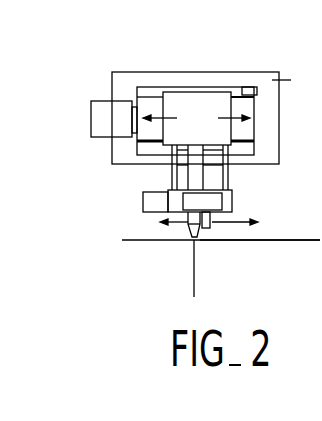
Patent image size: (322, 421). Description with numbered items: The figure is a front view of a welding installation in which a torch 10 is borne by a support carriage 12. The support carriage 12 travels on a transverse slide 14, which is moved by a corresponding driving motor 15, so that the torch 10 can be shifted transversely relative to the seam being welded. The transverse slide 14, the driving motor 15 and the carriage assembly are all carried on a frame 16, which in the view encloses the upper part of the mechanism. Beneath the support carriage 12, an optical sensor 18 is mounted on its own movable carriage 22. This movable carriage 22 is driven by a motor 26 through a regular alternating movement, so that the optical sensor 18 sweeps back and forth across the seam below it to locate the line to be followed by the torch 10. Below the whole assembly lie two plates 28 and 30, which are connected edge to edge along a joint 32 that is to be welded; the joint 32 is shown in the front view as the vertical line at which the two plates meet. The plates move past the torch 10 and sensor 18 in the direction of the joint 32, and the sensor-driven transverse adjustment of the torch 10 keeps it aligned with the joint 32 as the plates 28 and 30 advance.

The torch 10 is at (183, 233).
The support carriage 12 is at (202, 103).
The transverse slide 14 is at (243, 89).
The driving motor 15 is at (102, 108).
The frame 16 is at (125, 80).
The optical sensor 18 is at (234, 212).
The movable carriage 22 is at (213, 198).
The motor 26 is at (143, 205).
The plate 28 is at (143, 248).
The plate 30 is at (218, 253).
The joint 32 is at (194, 270).